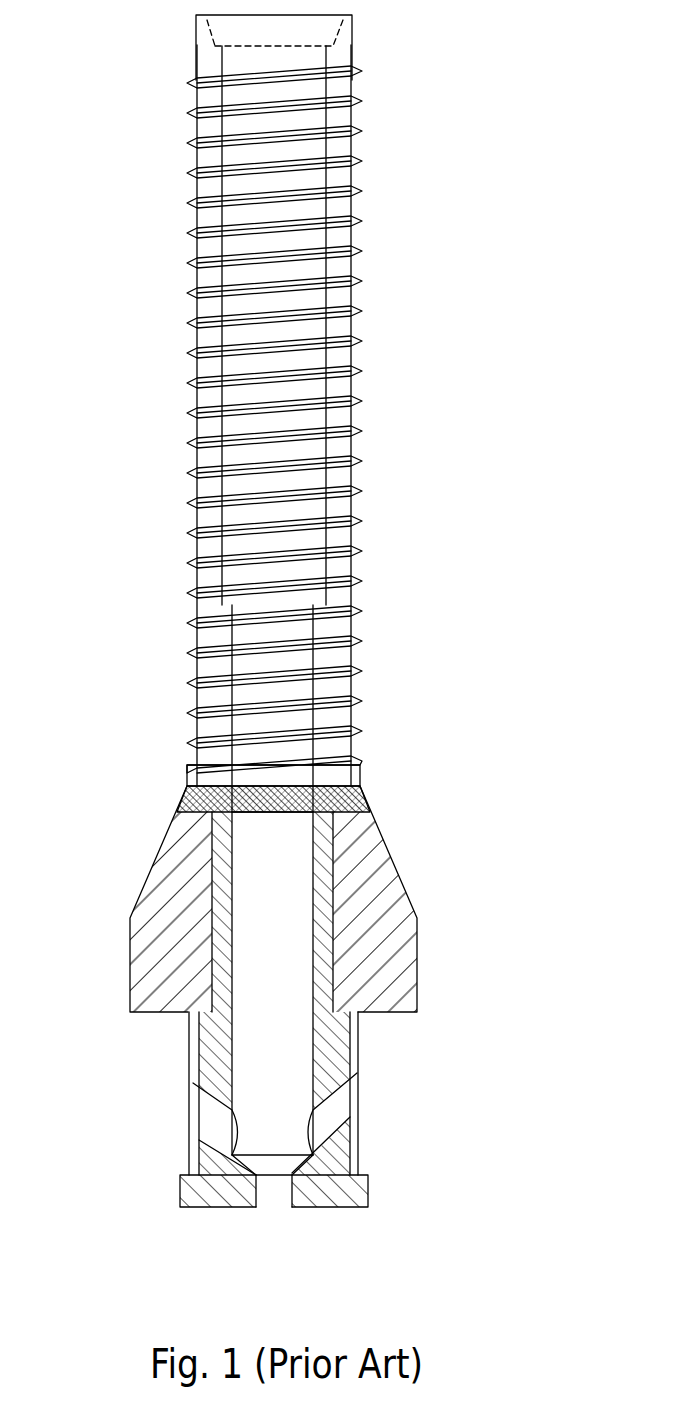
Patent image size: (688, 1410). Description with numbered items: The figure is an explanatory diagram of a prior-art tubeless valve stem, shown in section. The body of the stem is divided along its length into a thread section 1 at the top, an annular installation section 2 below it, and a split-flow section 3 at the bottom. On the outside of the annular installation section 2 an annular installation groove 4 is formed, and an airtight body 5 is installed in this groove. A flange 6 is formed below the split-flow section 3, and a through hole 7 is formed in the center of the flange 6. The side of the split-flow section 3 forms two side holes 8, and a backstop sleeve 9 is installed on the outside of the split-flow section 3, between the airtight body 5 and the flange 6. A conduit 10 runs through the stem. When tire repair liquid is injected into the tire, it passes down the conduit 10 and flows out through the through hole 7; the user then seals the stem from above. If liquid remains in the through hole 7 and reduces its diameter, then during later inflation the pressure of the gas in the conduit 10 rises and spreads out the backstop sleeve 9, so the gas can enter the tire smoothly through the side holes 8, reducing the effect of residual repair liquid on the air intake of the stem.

The thread section 1 is at (358, 247).
The annular installation section 2 is at (223, 903).
The split-flow section 3 is at (200, 1058).
The annular installation groove 4 is at (203, 1012).
The airtight body 5 is at (390, 916).
The flange 6 is at (183, 1188).
The through hole 7 is at (292, 1192).
The side hole 8 is at (337, 1100).
The backstop sleeve 9 is at (193, 1120).
The conduit 10 is at (318, 878).